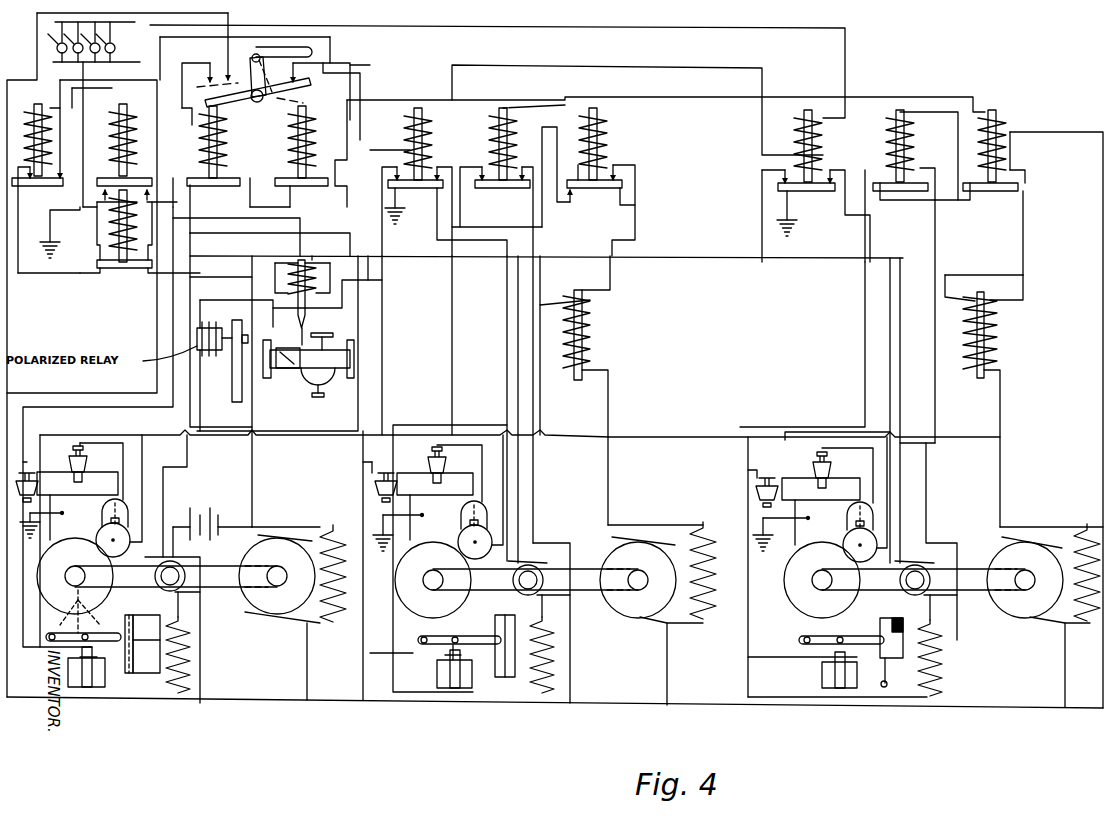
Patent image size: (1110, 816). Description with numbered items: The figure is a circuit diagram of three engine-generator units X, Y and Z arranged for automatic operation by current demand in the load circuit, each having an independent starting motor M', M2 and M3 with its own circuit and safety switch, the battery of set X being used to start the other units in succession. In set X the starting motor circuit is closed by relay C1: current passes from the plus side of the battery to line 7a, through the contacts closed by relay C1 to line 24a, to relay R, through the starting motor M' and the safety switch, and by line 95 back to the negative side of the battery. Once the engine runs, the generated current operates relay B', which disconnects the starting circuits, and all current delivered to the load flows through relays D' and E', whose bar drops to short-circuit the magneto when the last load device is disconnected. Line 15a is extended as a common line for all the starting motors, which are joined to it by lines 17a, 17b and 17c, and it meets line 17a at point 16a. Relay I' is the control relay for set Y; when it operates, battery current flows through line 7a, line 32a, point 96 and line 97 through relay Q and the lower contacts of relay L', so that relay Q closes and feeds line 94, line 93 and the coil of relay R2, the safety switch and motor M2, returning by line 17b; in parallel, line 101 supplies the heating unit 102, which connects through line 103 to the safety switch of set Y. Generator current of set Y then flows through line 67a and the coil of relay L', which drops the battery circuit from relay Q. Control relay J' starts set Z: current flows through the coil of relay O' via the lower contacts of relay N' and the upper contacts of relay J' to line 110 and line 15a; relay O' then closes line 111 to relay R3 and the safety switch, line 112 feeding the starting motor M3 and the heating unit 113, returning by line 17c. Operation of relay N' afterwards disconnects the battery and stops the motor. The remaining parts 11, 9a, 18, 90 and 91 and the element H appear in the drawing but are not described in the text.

The relay D' is at (120, 151).
The relay E' is at (131, 262).
The relay C1 is at (245, 135).
The pivoted lever 11 is at (254, 86).
The relay B' is at (310, 122).
The point 16a is at (195, 252).
The polarized relay H is at (222, 361).
The line 24a is at (175, 342).
The line 17a is at (190, 425).
The control relay I' is at (456, 169).
The conductor 9a is at (385, 247).
The relay Q is at (495, 105).
The relay L' is at (588, 182).
The conductor 18 is at (570, 228).
The control relay J' is at (816, 166).
The line 110 is at (762, 230).
The relay O' is at (911, 254).
The relay N' is at (995, 192).
The line 15a is at (400, 275).
The line 94 is at (370, 386).
The line 17b is at (507, 364).
The line 97 is at (540, 405).
The line 101 is at (450, 420).
The point 96 is at (540, 440).
The line 67a is at (612, 472).
The line 111 is at (862, 360).
The line 17c is at (900, 380).
The set X is at (180, 583).
The line 95 is at (78, 604).
The starting motor M' is at (188, 569).
The line 7a is at (252, 470).
The relay R is at (80, 678).
The line 103 is at (365, 703).
The set Y is at (517, 588).
The starting motor M2 is at (545, 597).
The spring 90 is at (550, 700).
The brake solenoid 91 is at (500, 680).
The line 93 is at (404, 657).
The relay R2 is at (445, 682).
The heating unit 102 is at (395, 485).
The line 32a is at (322, 437).
The set Z is at (901, 593).
The carburetor and primer heating unit 113 is at (757, 486).
The starting motor M3 is at (932, 597).
The relay R3 is at (830, 685).
The line 112 is at (868, 703).